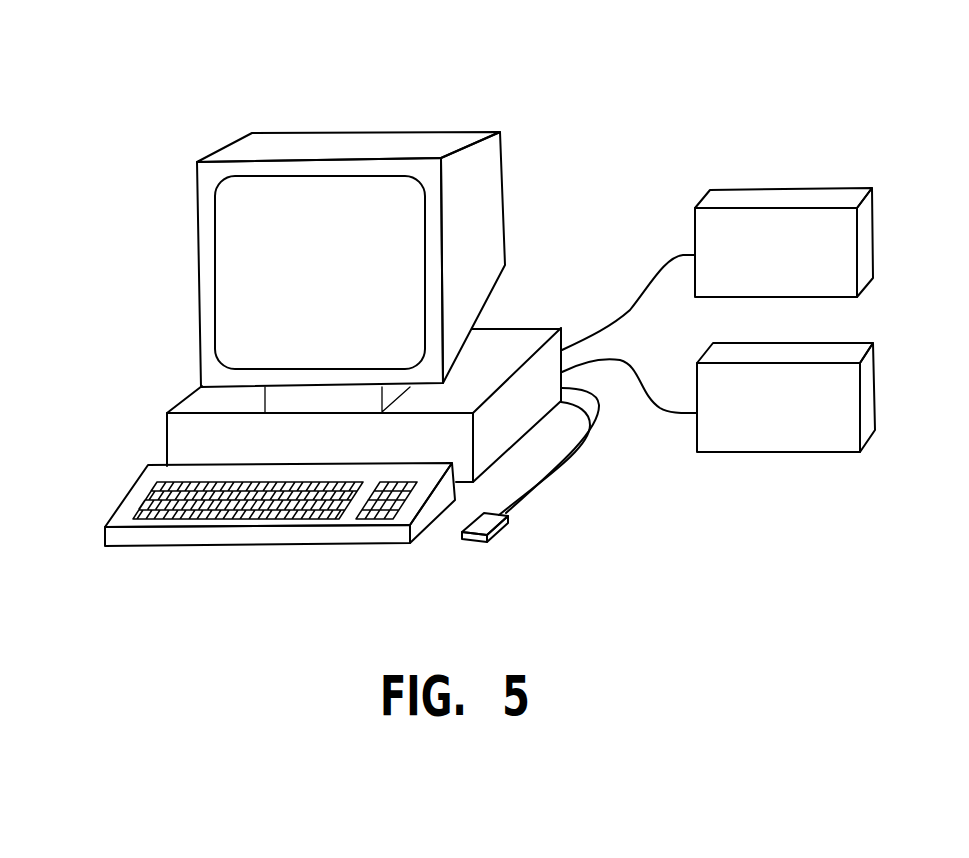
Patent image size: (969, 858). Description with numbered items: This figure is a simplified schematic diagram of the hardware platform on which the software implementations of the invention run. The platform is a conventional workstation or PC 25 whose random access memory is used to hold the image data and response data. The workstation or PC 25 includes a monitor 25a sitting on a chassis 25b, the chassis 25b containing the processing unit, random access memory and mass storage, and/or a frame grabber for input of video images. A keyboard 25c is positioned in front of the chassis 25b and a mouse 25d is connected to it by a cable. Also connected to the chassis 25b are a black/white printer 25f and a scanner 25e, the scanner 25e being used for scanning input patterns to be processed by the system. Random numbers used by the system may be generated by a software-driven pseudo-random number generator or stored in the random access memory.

The workstation or PC 25 is at (580, 90).
The monitor 25a is at (197, 253).
The chassis 25b is at (166, 442).
The keyboard 25c is at (120, 507).
The mouse 25d is at (502, 523).
The scanner 25e is at (797, 453).
The black/white printer 25f is at (792, 196).